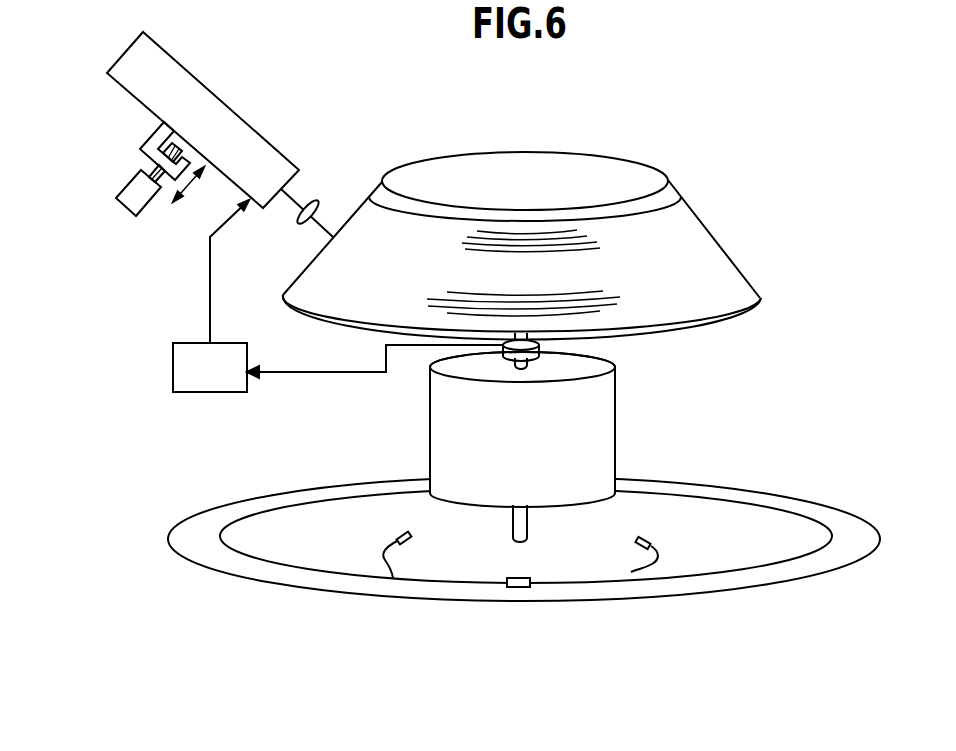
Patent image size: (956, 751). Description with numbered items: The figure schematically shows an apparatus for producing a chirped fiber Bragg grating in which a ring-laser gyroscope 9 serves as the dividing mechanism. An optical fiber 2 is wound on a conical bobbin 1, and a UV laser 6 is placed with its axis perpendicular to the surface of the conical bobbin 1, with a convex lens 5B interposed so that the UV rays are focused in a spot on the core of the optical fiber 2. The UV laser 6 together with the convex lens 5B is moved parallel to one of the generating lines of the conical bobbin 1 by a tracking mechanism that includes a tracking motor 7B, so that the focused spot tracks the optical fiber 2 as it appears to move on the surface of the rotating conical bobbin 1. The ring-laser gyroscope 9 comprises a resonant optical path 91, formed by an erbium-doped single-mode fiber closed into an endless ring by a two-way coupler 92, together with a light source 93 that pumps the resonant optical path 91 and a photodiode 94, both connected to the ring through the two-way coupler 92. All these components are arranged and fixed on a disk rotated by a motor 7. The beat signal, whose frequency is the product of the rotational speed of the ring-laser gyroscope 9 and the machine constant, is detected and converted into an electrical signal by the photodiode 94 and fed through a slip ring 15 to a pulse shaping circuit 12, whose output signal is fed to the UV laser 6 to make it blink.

The conical bobbin 1 is at (607, 153).
The optical fiber 2 is at (700, 230).
The convex lens 5B is at (315, 203).
The UV laser 6 is at (255, 130).
The motor 7 is at (614, 422).
The tracking motor 7B is at (127, 187).
The ring-laser gyroscope 9 is at (750, 491).
The pulse shaping circuit 12 is at (338, 296).
The slip ring 15 is at (540, 347).
The resonant optical path 91 is at (337, 575).
The two-way coupler 92 is at (518, 589).
The light source 93 is at (644, 541).
The photodiode 94 is at (399, 542).